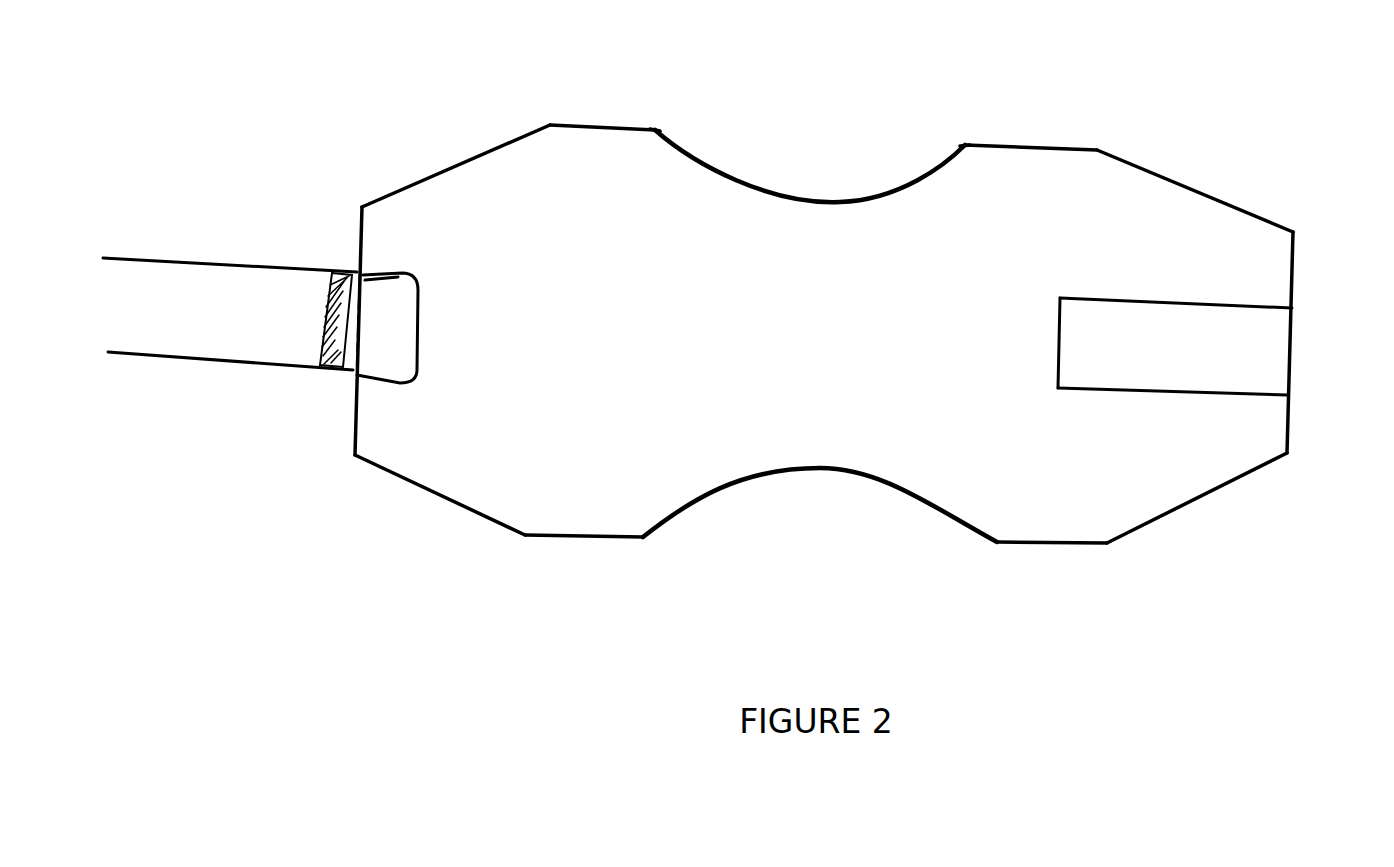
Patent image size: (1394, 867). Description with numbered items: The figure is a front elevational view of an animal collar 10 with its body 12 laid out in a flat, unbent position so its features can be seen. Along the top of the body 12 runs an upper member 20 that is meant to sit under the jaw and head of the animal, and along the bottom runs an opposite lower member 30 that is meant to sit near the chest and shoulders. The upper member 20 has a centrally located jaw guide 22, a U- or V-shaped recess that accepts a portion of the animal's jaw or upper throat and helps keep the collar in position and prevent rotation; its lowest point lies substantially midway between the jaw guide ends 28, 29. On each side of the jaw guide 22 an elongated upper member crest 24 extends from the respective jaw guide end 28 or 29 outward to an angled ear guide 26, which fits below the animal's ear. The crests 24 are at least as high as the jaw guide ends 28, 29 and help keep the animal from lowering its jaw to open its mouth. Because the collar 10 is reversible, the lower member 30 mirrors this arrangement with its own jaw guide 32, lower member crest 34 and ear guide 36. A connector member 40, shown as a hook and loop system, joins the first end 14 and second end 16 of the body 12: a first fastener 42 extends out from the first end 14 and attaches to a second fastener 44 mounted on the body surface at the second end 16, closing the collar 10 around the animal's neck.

The animal collar 10 is at (355, 93).
The body 12 is at (824, 332).
The first end 14 is at (363, 237).
The second end 16 is at (1292, 270).
The upper member 20 is at (990, 118).
The jaw guide 22 is at (783, 190).
The upper member crest 24 is at (580, 123).
The ear guide 26 is at (435, 177).
The jaw guide end 28 is at (655, 130).
The jaw guide end 29 is at (962, 145).
The lower member 30 is at (1109, 550).
The jaw guide 32 is at (865, 478).
The lower member crest 34 is at (588, 537).
The ear guide 36 is at (437, 495).
The connector member 40 is at (273, 377).
The first fastener 42 is at (303, 277).
The second fastener 44 is at (1267, 380).